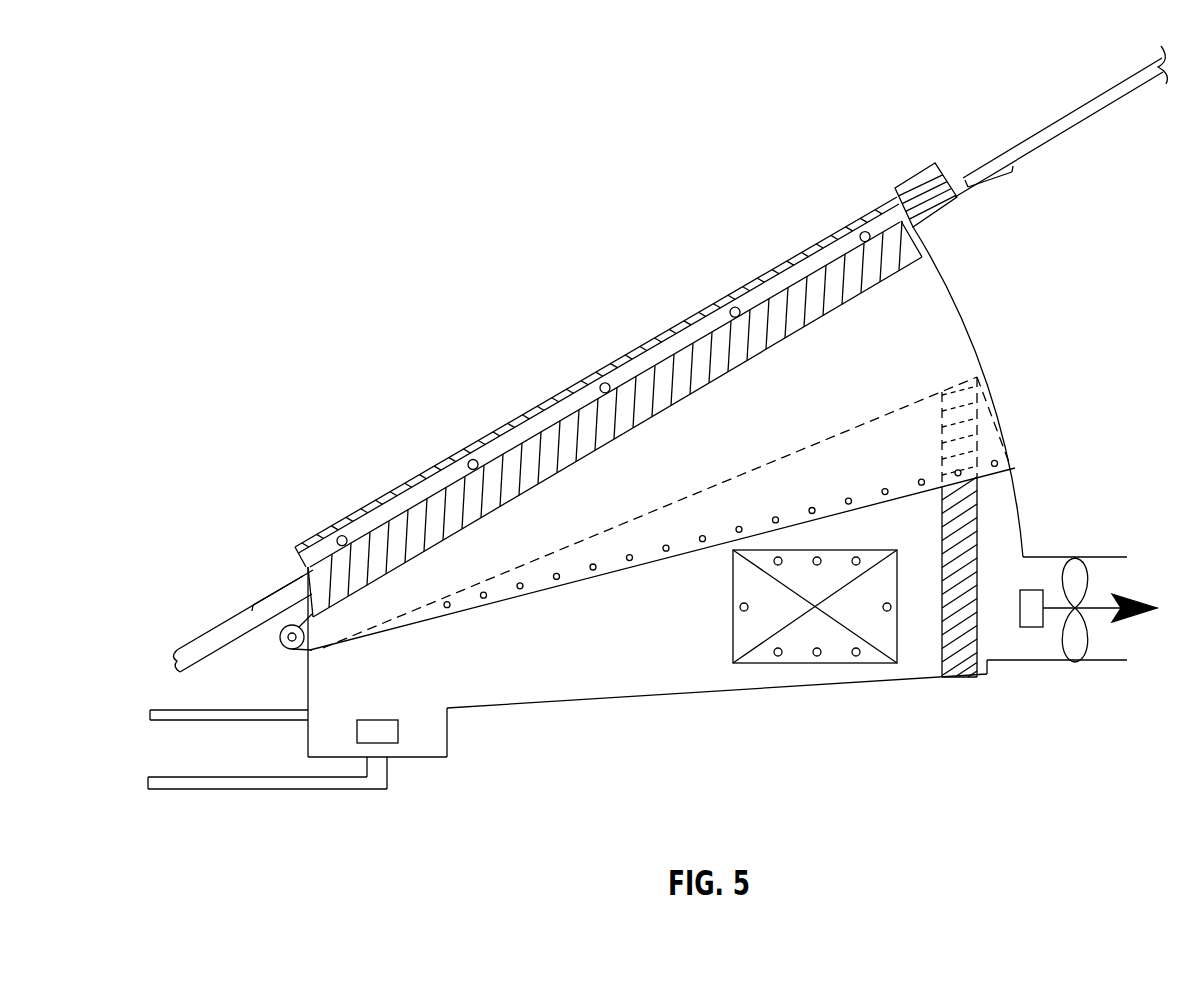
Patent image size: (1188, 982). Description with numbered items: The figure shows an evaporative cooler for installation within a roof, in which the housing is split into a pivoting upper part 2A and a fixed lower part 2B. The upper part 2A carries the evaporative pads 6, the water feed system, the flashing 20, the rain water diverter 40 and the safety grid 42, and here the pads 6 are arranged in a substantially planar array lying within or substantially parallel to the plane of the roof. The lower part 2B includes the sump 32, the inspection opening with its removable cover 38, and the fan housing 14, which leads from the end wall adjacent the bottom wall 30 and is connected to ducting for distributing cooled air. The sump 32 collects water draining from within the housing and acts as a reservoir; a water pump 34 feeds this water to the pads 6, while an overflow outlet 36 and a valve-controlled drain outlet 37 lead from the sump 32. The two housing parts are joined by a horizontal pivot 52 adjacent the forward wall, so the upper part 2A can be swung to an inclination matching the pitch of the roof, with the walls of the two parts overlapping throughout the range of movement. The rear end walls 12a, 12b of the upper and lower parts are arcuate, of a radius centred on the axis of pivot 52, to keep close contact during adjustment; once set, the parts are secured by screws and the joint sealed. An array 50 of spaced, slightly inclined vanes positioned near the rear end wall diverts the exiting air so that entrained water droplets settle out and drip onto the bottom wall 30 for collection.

The evaporative pads 6 is at (625, 410).
The rear end wall of upper housing part 12a is at (1003, 400).
The rear end wall of lower housing part 12b is at (1015, 493).
The fan housing 14 is at (1107, 557).
The flashing 20 is at (272, 588).
The upper part of the housing 2A is at (900, 342).
The lower part of the housing 2B is at (558, 650).
The bottom wall 30 is at (682, 694).
The sump 32 is at (447, 748).
The water pump 34 is at (380, 735).
The overflow outlet 36 is at (222, 723).
The valve-controlled drain outlet 37 is at (327, 783).
The cover 38 is at (871, 633).
The rain water diverter 40 is at (917, 190).
The safety grid 42 is at (397, 488).
The array of spaced vanes 50 is at (962, 535).
The horizontal pivot 52 is at (290, 649).